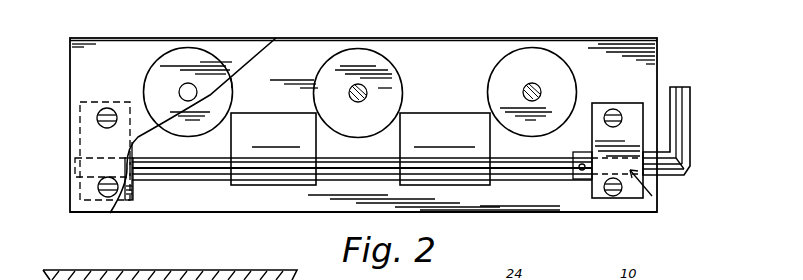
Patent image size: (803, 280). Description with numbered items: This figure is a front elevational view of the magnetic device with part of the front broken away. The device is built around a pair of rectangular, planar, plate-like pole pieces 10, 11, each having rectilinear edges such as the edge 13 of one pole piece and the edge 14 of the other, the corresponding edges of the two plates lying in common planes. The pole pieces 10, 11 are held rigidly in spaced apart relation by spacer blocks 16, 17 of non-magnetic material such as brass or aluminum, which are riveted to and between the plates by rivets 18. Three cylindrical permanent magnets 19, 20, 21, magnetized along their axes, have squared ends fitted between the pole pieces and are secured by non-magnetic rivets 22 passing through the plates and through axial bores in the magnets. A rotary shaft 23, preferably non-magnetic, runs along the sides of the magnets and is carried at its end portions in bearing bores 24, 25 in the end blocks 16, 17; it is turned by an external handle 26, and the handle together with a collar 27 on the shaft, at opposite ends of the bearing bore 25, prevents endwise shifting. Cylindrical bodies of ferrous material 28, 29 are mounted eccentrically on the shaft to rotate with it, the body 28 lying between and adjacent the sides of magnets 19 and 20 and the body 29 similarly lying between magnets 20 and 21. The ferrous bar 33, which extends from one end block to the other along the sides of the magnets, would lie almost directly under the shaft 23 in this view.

The pole piece 10 is at (180, 46).
The pole piece 11 is at (276, 39).
The rectilinear edge 13 is at (137, 38).
The rectilinear edge 14 is at (587, 213).
The spacer block 16 is at (78, 150).
The spacer block 17 is at (643, 103).
The rivets 18 is at (108, 177).
The permanent magnet 19 is at (232, 88).
The permanent magnet 20 is at (402, 90).
The permanent magnet 21 is at (576, 94).
The non-magnetic rivets 22 is at (179, 92).
The rotary shaft 23 is at (338, 174).
The bearing bore 24 is at (77, 182).
The bearing bore 25 is at (657, 198).
The external handle 26 is at (691, 119).
The collar 27 is at (580, 181).
The cylindrical ferrous body 28 is at (272, 186).
The cylindrical ferrous body 29 is at (474, 186).
The bar 33 is at (193, 184).